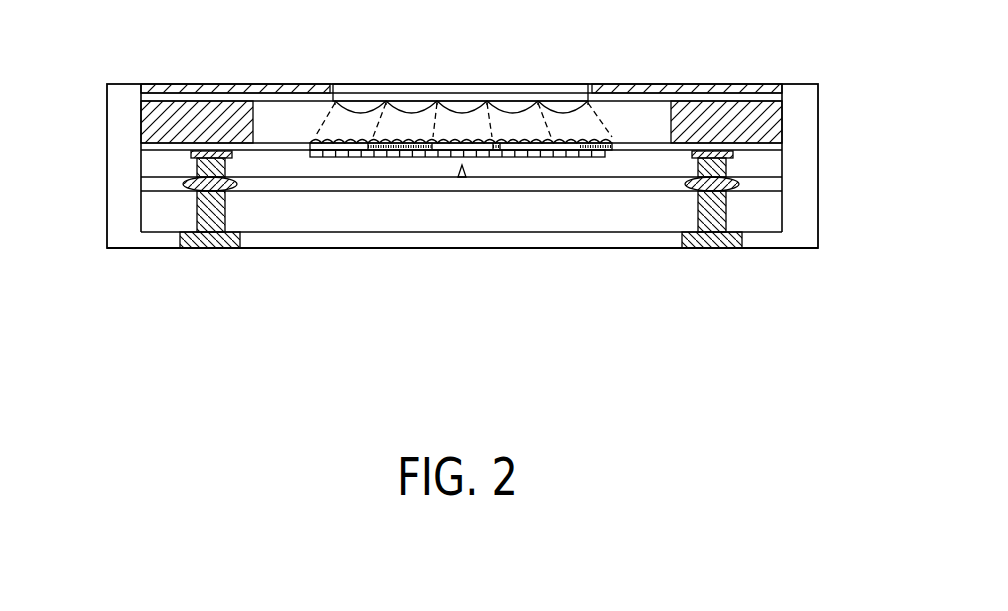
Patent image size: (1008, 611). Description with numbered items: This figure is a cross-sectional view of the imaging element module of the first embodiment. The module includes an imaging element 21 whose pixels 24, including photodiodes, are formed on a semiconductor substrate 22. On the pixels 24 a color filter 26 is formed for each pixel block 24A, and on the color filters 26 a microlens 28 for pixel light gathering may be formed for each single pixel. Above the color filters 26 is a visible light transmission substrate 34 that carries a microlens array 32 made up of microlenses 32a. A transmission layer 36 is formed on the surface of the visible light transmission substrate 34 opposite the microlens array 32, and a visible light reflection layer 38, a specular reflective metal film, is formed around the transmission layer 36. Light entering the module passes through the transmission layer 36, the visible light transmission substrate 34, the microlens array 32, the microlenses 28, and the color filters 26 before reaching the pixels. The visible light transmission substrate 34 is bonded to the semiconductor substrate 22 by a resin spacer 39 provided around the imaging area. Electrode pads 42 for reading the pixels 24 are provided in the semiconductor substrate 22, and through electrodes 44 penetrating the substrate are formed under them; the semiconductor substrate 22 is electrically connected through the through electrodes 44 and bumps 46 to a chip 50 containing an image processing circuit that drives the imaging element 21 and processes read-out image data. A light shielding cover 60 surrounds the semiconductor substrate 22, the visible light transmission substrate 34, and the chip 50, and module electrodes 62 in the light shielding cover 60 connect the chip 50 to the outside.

The imaging element 21 is at (462, 177).
The semiconductor substrate 22 is at (773, 163).
The pixels 24 is at (615, 150).
The pixel block 24A is at (335, 158).
The color filter 26 is at (626, 144).
The microlens 28 is at (586, 137).
The microlens array 32 is at (583, 312).
The microlenses 32a is at (561, 110).
The visible light transmission substrate 34 is at (737, 100).
The transmission layer 36 is at (375, 88).
The visible light reflection layer 38 is at (242, 90).
The spacer 39 is at (190, 98).
The electrode pads 42 is at (190, 157).
The through electrodes 44 is at (187, 167).
The bumps 46 is at (190, 185).
The chip 50 is at (157, 213).
The light shielding cover 60 is at (118, 238).
The module electrodes 62 is at (210, 248).